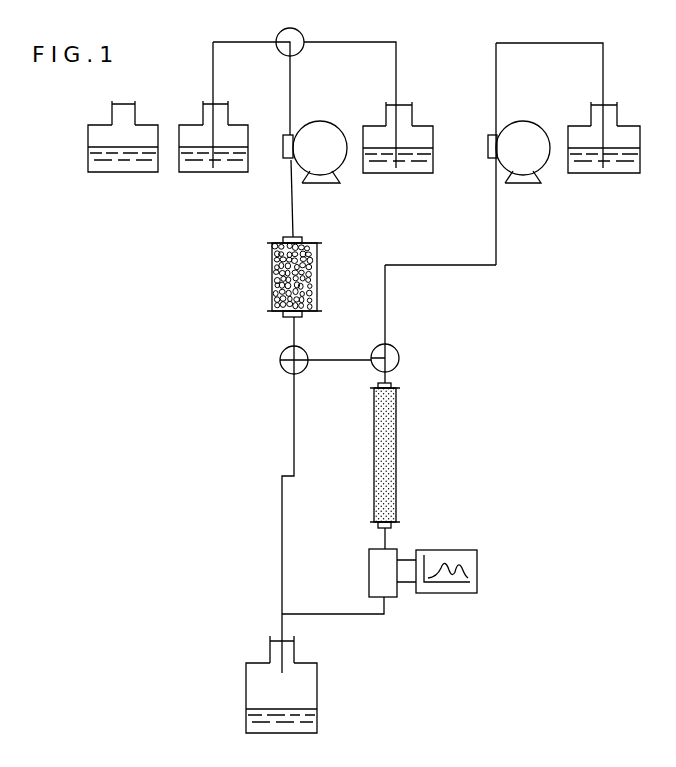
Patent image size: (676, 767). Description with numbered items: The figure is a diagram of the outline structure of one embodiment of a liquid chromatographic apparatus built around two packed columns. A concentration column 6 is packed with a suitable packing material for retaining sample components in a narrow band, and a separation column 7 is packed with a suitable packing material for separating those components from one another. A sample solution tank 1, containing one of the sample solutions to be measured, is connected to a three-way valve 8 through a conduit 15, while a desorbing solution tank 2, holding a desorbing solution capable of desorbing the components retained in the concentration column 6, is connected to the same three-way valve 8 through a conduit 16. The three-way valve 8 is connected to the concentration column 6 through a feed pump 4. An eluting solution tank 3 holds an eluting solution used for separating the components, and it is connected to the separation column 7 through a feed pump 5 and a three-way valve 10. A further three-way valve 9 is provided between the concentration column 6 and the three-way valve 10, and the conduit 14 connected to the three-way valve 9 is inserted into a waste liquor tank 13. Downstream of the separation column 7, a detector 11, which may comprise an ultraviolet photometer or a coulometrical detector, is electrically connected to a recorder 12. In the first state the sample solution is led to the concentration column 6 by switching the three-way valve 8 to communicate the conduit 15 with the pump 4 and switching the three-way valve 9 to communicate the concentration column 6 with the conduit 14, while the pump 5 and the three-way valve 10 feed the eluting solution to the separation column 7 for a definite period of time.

The sample solution tank 1 is at (204, 172).
The desorbing solution tank 2 is at (416, 173).
The eluting solution tank 3 is at (596, 173).
The feed pump 4 is at (330, 120).
The feed pump 5 is at (532, 120).
The concentration column 6 is at (322, 290).
The separation column 7 is at (400, 467).
The three-way valve 8 is at (301, 32).
The three-way valve 9 is at (280, 361).
The three-way valve 10 is at (399, 356).
The detector 11 is at (369, 572).
The recorder 12 is at (477, 572).
The waste liquor tank 13 is at (317, 697).
The conduit 14 is at (282, 545).
The conduit 15 is at (238, 42).
The conduit 16 is at (369, 42).